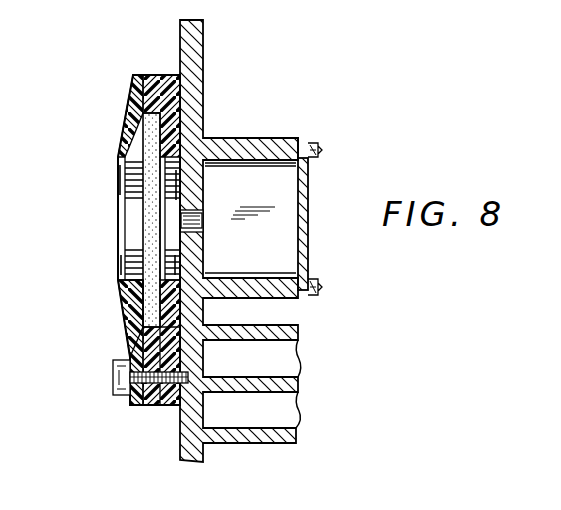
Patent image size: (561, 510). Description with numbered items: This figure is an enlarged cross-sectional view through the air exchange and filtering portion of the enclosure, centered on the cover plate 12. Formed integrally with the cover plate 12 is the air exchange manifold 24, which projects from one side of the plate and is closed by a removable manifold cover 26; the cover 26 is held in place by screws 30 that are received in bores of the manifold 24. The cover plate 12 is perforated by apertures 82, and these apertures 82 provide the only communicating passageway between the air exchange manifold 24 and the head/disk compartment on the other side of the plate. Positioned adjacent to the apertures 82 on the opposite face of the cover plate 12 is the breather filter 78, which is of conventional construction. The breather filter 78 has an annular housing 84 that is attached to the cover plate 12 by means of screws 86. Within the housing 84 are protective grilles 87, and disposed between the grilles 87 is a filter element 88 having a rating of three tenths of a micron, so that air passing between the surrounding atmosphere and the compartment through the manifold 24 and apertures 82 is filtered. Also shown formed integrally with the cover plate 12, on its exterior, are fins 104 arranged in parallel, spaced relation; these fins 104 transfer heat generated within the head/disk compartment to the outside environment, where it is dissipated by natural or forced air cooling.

The cover plate 12 is at (205, 82).
The air exchange manifold 24 is at (274, 148).
The manifold cover 26 is at (310, 187).
The screws 30 is at (320, 150).
The breather filter 78 is at (108, 350).
The apertures 82 is at (203, 221).
The annular housing 84 is at (126, 140).
The screws 86 is at (114, 385).
The protective grilles 87 is at (122, 228).
The filter element 88 is at (118, 297).
The fins 104 is at (298, 333).